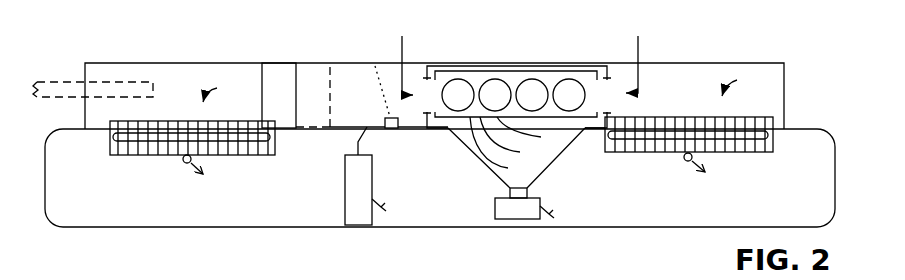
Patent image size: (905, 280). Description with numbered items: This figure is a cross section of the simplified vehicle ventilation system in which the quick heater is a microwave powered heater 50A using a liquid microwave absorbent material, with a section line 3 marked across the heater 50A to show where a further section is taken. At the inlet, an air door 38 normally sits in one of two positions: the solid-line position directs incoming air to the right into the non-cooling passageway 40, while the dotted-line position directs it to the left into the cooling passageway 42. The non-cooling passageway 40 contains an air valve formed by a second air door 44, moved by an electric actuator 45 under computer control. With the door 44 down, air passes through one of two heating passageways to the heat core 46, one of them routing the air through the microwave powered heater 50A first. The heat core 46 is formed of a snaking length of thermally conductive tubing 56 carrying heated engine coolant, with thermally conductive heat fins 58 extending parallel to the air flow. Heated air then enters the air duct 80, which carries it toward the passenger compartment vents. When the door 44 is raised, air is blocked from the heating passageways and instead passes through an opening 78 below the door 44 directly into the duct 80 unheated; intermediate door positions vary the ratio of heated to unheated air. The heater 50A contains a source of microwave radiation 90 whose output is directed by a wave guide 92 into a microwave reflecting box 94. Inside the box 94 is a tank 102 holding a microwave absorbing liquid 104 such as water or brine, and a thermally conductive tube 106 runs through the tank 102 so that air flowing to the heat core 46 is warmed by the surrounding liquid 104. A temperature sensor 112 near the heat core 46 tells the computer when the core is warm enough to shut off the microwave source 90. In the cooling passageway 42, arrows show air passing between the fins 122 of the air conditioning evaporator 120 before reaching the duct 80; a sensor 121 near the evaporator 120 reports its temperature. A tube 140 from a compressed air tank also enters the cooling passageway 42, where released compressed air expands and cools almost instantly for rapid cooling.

The section line 3— 3 is at (519, 55).
The air door 38 is at (277, 82).
The non-cooling passageway 40 is at (345, 78).
The cooling passageway 42 is at (182, 92).
The air door 44 is at (372, 120).
The electric actuator 45 is at (345, 187).
The heat core 46 is at (742, 83).
The microwave powered heater 50A is at (514, 46).
The thermally conductive tubing 56 is at (760, 150).
The heat fins 58 is at (723, 142).
The opening 78 is at (353, 130).
The air duct 80 is at (418, 200).
The source of microwave radiation 90 is at (495, 210).
The wave guide 92 is at (485, 168).
The microwave reflecting box 94 is at (427, 75).
The tank 102 is at (507, 149).
The microwave absorbing liquid 104 is at (517, 139).
The tube 106 is at (537, 132).
The temperature sensor 112 is at (683, 158).
The evaporator 120 is at (230, 90).
The sensor 121 is at (178, 160).
The fins 122 is at (158, 150).
The tube 140 is at (132, 82).